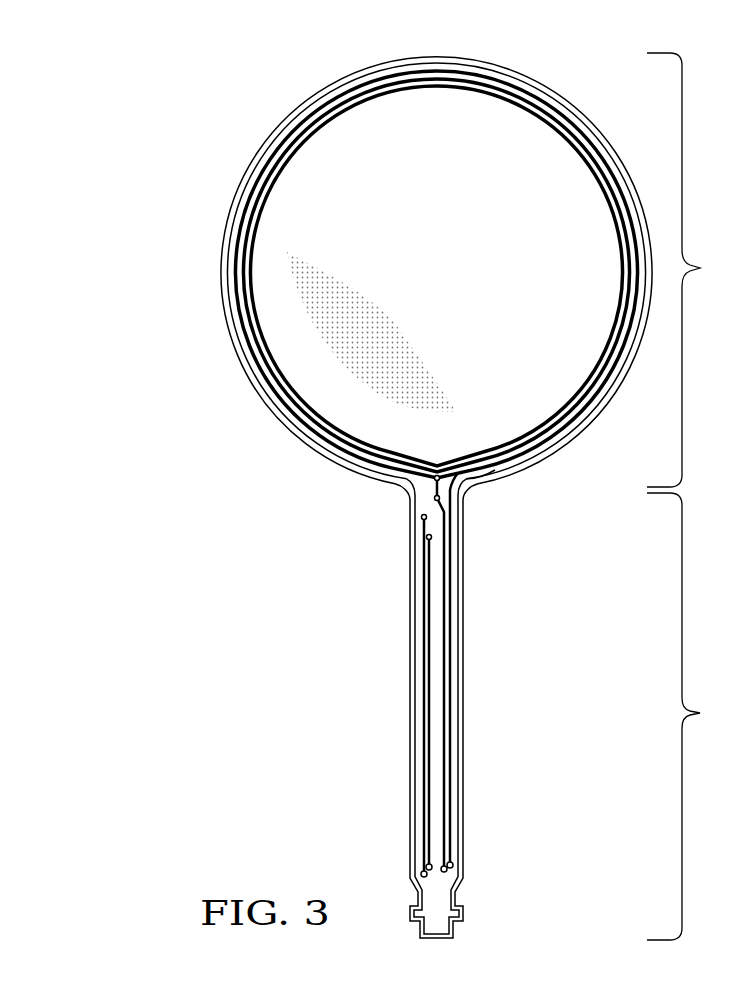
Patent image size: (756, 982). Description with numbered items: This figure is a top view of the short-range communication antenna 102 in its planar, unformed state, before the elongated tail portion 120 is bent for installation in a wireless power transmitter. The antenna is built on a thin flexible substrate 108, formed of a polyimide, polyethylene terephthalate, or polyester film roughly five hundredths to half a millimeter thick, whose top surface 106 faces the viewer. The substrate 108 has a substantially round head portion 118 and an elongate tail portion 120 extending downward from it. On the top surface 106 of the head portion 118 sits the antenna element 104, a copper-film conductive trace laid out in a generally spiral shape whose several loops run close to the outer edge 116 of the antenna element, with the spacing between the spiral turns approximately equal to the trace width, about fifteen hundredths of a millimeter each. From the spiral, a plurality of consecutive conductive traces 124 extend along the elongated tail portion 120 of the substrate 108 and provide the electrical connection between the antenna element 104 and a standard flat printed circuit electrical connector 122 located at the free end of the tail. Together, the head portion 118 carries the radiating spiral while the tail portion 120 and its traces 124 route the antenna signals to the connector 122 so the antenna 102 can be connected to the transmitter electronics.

The short-range communication antenna 102 is at (252, 88).
The antenna element 104 is at (252, 350).
The top surface 106 is at (455, 255).
The flexible substrate 108 is at (525, 481).
The outer edge 116 is at (233, 205).
The substantially round head portion 118 is at (701, 270).
The elongated tail portion 120 is at (693, 716).
The FPC electrical connector 122 is at (440, 912).
The conductive traces 124 is at (450, 695).